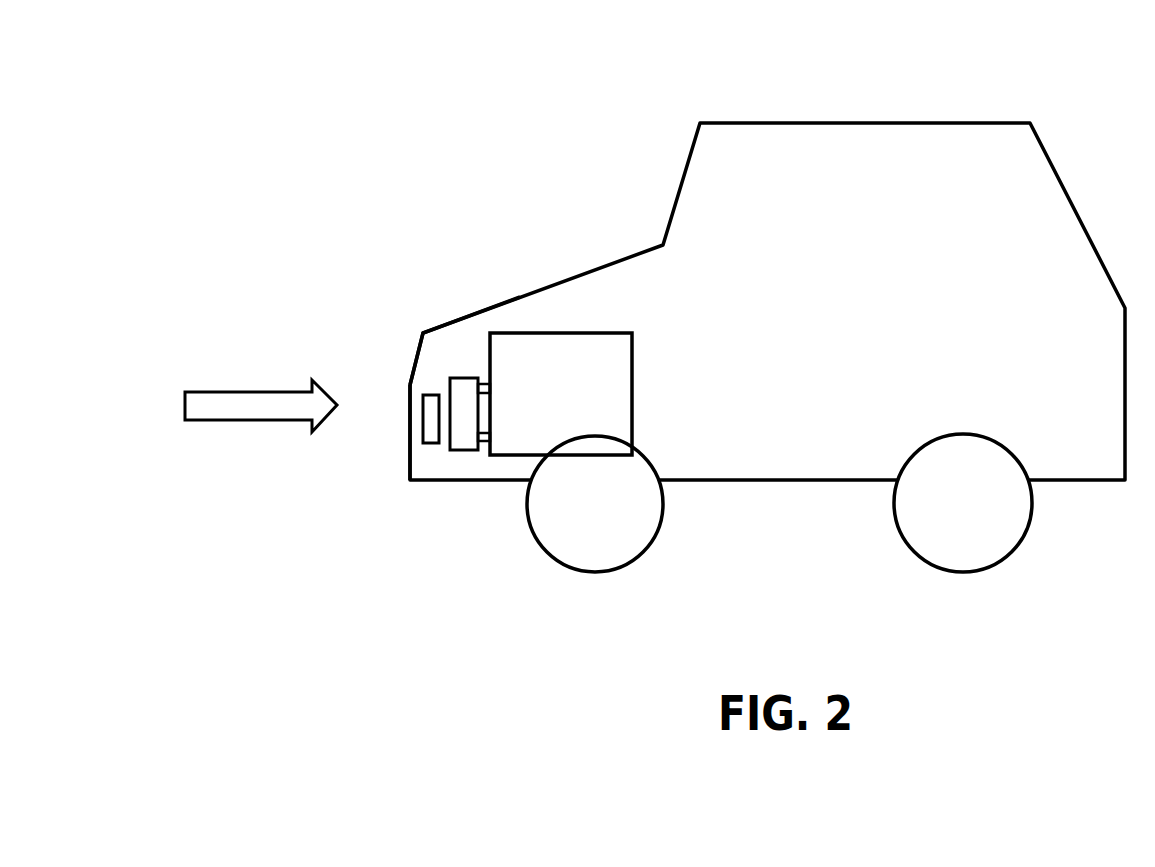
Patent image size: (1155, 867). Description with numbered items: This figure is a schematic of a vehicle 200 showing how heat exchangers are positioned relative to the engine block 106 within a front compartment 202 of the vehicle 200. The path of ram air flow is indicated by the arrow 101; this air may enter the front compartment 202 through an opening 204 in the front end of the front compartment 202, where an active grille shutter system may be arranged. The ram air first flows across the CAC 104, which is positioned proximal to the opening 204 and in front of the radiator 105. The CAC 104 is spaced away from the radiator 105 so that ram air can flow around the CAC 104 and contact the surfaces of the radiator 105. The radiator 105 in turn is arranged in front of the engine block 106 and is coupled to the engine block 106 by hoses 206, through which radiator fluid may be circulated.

The vehicle 200 is at (558, 90).
The front compartment 202 is at (358, 265).
The opening 204 is at (400, 398).
The arrow 101 is at (238, 412).
The CAC 104 is at (421, 428).
The radiator 105 is at (477, 380).
The engine block 106 is at (579, 407).
The hoses 206 is at (482, 385).